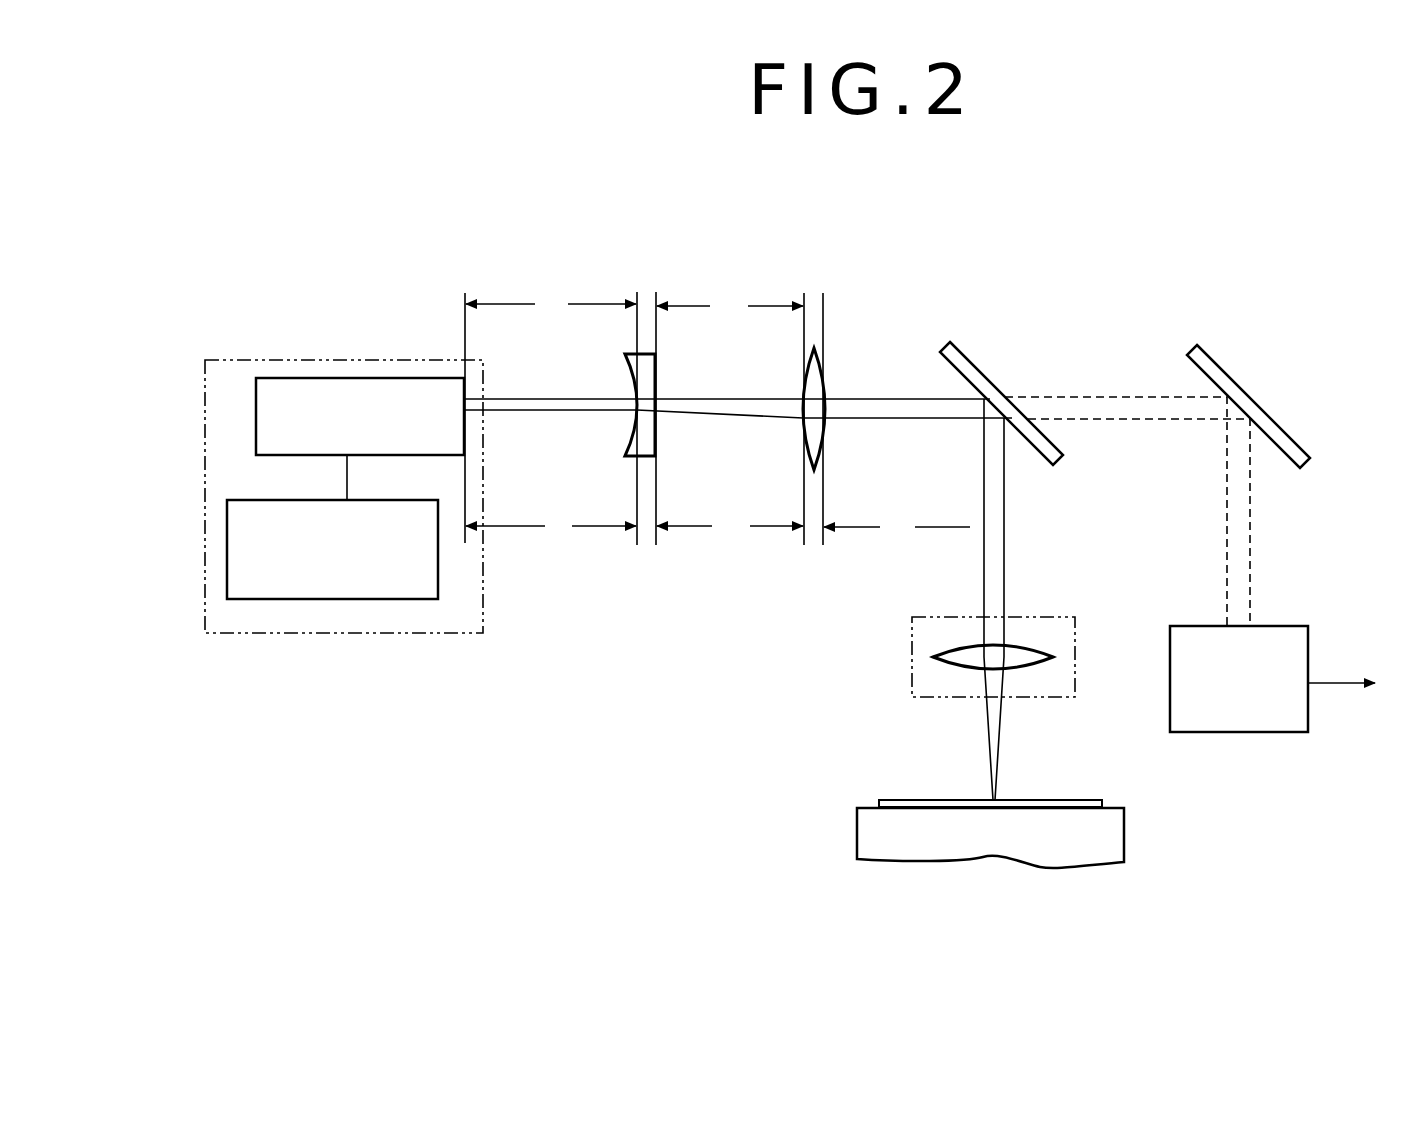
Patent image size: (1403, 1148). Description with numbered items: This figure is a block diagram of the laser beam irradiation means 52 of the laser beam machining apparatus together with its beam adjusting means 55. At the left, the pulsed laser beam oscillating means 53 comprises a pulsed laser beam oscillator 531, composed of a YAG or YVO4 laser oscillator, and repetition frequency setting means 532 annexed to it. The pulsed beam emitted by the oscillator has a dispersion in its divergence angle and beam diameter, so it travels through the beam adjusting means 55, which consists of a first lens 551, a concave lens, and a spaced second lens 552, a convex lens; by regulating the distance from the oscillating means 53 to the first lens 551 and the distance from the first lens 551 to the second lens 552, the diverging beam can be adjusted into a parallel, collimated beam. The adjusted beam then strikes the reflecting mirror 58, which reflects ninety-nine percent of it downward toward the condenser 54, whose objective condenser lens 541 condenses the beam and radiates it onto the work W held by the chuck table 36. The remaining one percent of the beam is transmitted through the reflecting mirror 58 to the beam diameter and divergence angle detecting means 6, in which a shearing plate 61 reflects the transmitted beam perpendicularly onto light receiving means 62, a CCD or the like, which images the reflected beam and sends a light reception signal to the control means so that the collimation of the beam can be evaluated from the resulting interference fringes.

The laser beam irradiation means 52 is at (503, 266).
The pulsed laser beam oscillating means 53 is at (293, 352).
The pulsed laser beam oscillator 531 is at (360, 378).
The repetition frequency setting means 532 is at (337, 600).
The beam adjusting means 55 is at (646, 281).
The first lens 551 is at (653, 378).
The second lens 552 is at (825, 368).
The reflecting mirror 58 is at (962, 350).
The beam diameter and divergence angle detecting means 6 is at (1201, 562).
The shearing plate 61 is at (1205, 348).
The light receiving means 62 is at (1248, 733).
The condenser 54 is at (1035, 617).
The condenser lens 541 is at (935, 657).
The work W is at (1083, 795).
The chuck table 36 is at (997, 850).